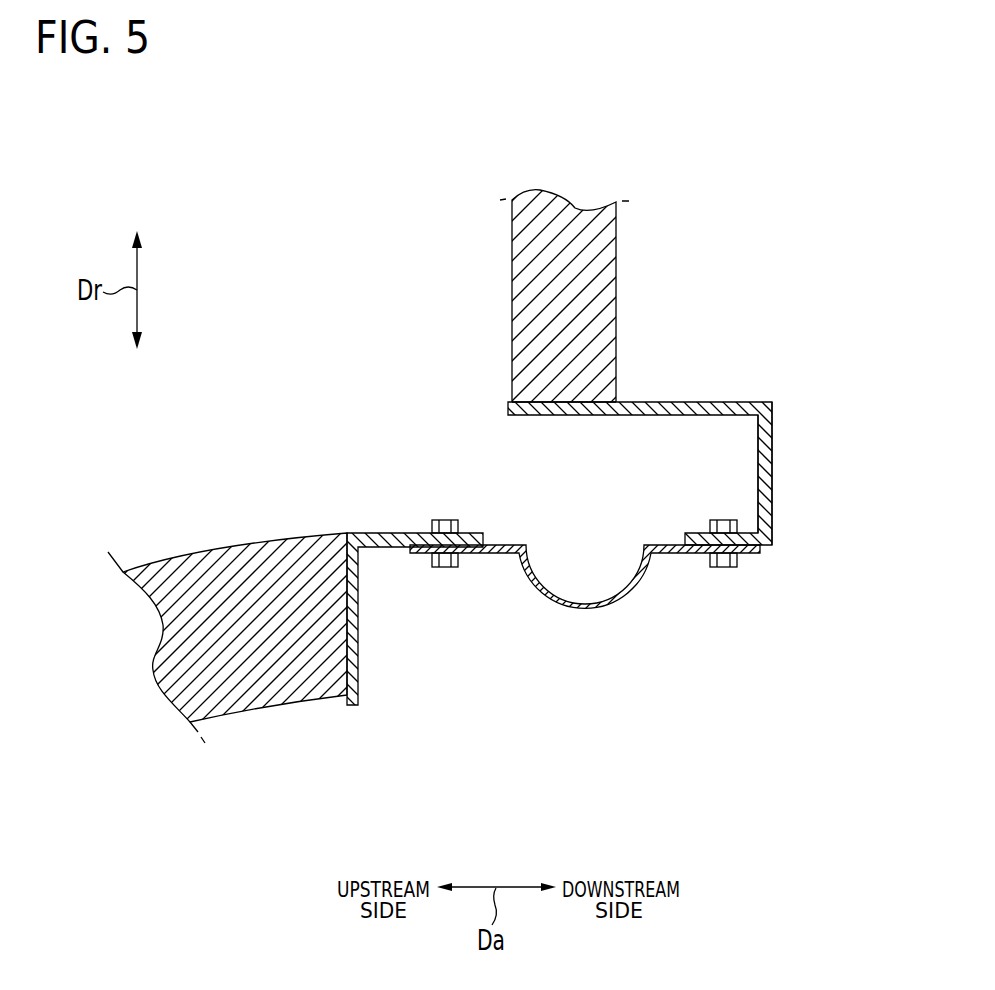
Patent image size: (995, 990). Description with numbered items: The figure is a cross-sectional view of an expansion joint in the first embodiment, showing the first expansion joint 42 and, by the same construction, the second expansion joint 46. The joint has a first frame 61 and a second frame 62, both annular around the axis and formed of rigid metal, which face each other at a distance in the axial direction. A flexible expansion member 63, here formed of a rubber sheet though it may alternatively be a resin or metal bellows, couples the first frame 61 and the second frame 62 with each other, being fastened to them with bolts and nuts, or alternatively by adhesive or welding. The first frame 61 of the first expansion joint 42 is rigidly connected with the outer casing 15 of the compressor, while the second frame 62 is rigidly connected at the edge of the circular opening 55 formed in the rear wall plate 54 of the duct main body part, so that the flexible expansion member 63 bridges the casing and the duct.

The outer casing 15 is at (270, 680).
The first expansion joint 42 is at (666, 436).
The second expansion joint 46 is at (714, 385).
The rear wall plate 54 is at (595, 253).
The circular opening 55 is at (538, 404).
The first frame 61 is at (380, 548).
The second frame 62 is at (772, 474).
The expansion member 63 is at (603, 607).